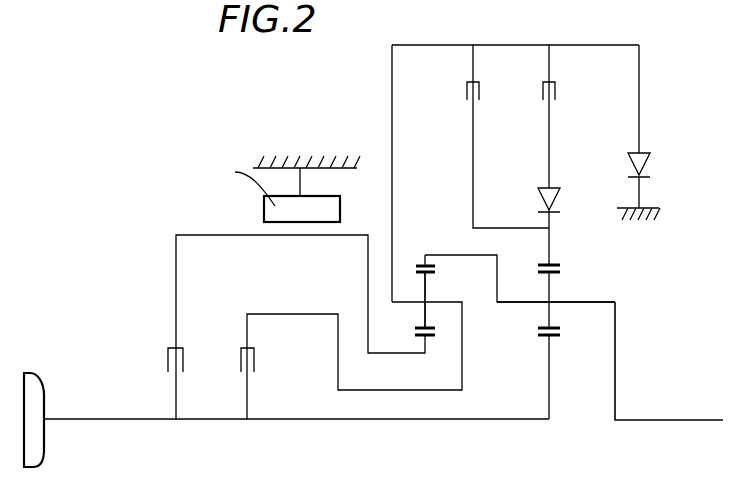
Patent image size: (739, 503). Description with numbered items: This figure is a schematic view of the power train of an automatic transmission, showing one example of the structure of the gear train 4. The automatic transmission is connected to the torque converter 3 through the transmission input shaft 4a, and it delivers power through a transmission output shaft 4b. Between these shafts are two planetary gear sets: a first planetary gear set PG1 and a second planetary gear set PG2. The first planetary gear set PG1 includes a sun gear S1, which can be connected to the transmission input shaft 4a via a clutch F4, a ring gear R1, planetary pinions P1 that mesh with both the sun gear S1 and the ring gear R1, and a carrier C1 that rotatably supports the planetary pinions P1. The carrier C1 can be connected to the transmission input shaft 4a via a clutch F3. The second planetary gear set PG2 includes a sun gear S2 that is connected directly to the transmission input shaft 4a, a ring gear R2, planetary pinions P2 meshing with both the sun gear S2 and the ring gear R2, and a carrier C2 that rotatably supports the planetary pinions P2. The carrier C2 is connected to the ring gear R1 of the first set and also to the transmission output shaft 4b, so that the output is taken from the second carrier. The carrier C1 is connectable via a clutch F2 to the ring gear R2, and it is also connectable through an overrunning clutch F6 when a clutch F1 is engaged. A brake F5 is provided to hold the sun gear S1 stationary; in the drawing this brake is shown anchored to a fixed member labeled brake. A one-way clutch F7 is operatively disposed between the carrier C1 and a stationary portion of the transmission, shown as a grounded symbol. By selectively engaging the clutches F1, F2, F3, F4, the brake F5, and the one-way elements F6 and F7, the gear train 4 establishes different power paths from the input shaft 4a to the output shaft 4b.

The torque converter 3 is at (40, 376).
The gear train 4 is at (571, 41).
The transmission input shaft 4a is at (107, 420).
The transmission output shaft 4b is at (676, 421).
The clutch F1 is at (543, 93).
The clutch F2 is at (466, 93).
The clutch F3 is at (255, 360).
The clutch F4 is at (168, 360).
The brake F5 is at (264, 208).
The overrunning clutch F6 is at (560, 190).
The one-way clutch F7 is at (649, 160).
The ring gear R1 is at (425, 255).
The ring gear R2 is at (551, 262).
The planetary pinions P1 is at (426, 289).
The planetary pinions P2 is at (551, 289).
The sun gear S1 is at (424, 342).
The sun gear S2 is at (551, 354).
The carrier C1 is at (462, 318).
The carrier C2 is at (615, 301).
The first planetary gear set PG1 is at (423, 310).
The second planetary gear set PG2 is at (556, 317).